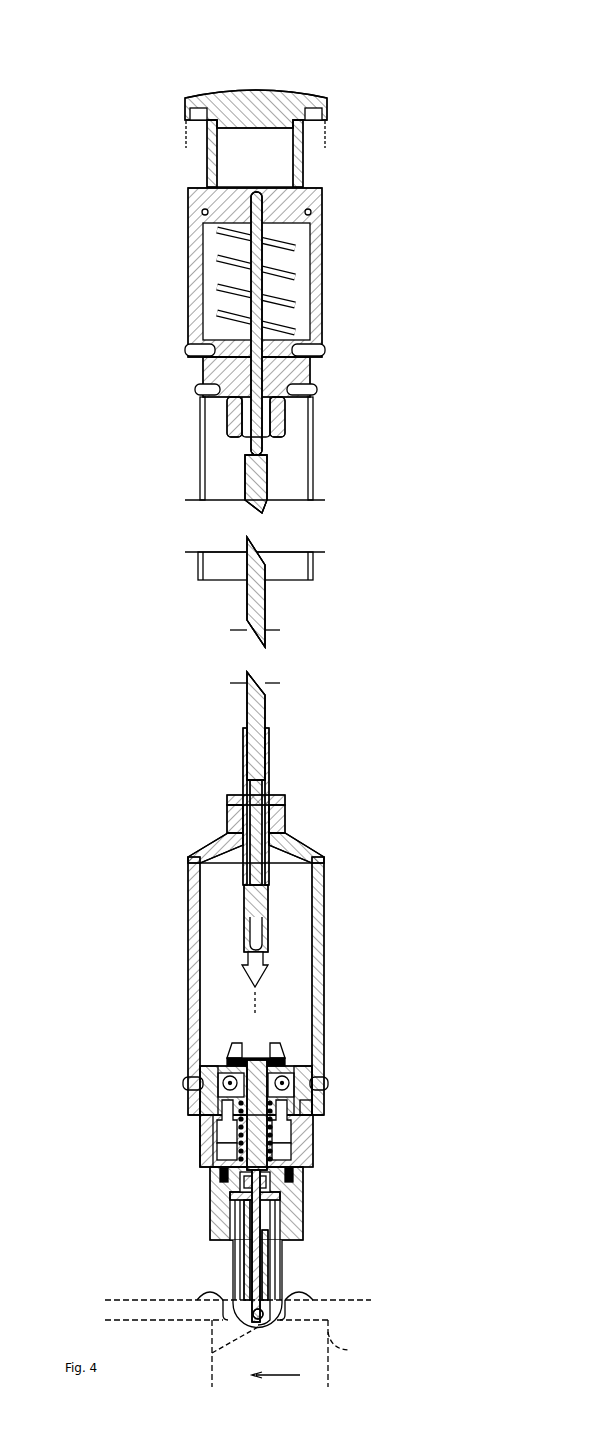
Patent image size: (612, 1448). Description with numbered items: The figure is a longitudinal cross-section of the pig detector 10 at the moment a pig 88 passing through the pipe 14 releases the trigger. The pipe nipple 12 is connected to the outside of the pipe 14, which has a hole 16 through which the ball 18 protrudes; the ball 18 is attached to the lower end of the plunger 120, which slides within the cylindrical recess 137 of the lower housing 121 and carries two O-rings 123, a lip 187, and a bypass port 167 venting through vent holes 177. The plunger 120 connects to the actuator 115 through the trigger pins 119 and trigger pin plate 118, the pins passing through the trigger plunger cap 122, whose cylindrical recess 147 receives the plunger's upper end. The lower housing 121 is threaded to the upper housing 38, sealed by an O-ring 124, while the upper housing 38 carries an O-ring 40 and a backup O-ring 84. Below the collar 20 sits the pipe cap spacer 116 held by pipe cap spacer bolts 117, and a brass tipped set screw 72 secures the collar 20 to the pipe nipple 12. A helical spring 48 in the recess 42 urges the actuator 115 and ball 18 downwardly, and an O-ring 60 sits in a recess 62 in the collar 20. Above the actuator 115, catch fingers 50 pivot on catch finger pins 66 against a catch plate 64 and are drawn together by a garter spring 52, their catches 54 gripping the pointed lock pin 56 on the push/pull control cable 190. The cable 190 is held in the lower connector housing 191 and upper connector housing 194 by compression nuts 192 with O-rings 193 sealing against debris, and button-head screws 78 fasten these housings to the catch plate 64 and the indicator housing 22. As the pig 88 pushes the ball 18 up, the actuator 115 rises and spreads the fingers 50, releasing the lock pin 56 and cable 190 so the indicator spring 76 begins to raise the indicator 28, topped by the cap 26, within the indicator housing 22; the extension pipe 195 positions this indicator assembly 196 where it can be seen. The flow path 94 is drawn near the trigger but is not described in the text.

The pig detector 10 is at (248, 974).
The pipe nipple 12 is at (290, 1280).
The pipe 14 is at (371, 1298).
The hole 16 is at (226, 1318).
The ball (trigger) 18 is at (240, 1322).
The collar 20 is at (200, 1125).
The indicator housing 22 is at (325, 205).
The cap 26 is at (208, 88).
The indicator 28 is at (205, 140).
The upper housing 38 is at (300, 1167).
The O-ring 40 is at (305, 1175).
The recess 42 is at (238, 1150).
The helical spring 48 is at (313, 1133).
The catch fingers 50 is at (226, 1080).
The garter spring 52 is at (278, 1062).
The catches 54 is at (233, 1045).
The lock pin 56 is at (245, 955).
The O-ring 60 is at (323, 1105).
The recess 62 is at (203, 1097).
The catch plate 64 is at (327, 1095).
The catch finger pins 66 is at (205, 1078).
The brass tipped set screw 72 is at (218, 1143).
The indicator spring 76 is at (222, 262).
The button-head screws 78 is at (190, 347).
The backup O-ring 84 is at (292, 1172).
The pig 88 is at (350, 1351).
The flow path 94 is at (240, 1333).
The actuator 115 is at (198, 1116).
The pipe cap spacer 116 is at (205, 1128).
The pipe cap spacer bolts 117 is at (210, 1136).
The trigger pin plate 118 is at (240, 1180).
The trigger pins 119 is at (245, 1198).
The plunger 120 is at (225, 1298).
The lower housing 121 is at (285, 1268).
The trigger plunger cap 122 is at (282, 1250).
The O-rings 123 is at (240, 1268).
The O-ring 124 is at (290, 1198).
The cylindrical recess 137 is at (238, 1258).
The cylindrical recess 147 is at (247, 1210).
The bypass port 167 is at (300, 1305).
The vent holes 177 is at (267, 1305).
The lip 187 is at (282, 1236).
The push/pull control cable 190 is at (268, 770).
The lower connector housing 191 is at (324, 878).
The compression nut 192 is at (284, 406).
The O-ring 193 is at (283, 428).
The upper connector housing 194 is at (290, 368).
The extension pipe 195 is at (313, 478).
The indicator assembly 196 is at (297, 47).